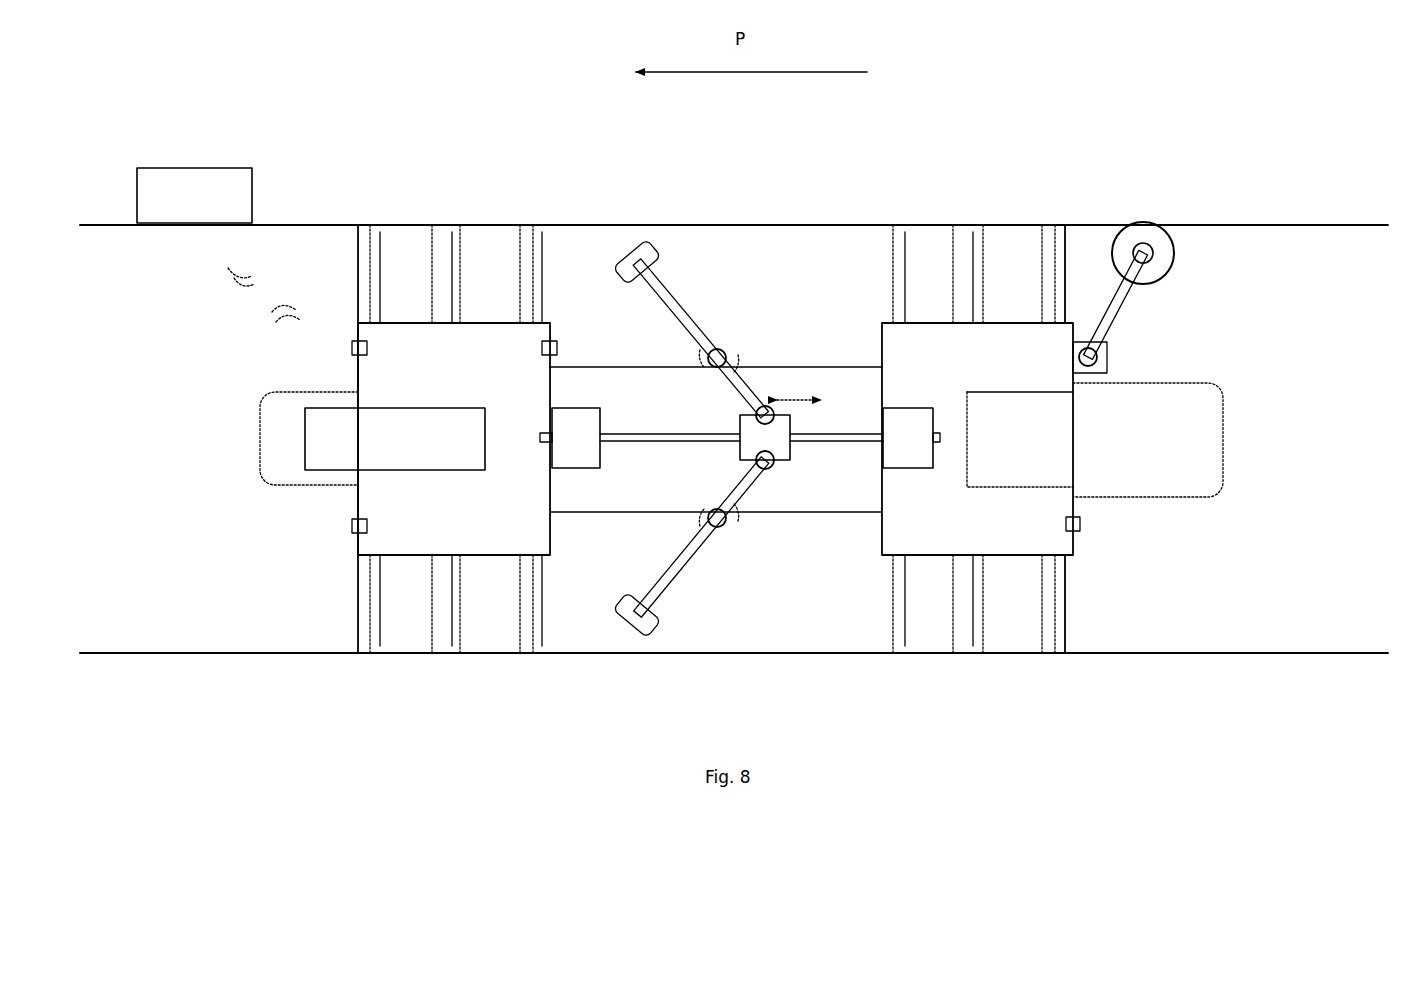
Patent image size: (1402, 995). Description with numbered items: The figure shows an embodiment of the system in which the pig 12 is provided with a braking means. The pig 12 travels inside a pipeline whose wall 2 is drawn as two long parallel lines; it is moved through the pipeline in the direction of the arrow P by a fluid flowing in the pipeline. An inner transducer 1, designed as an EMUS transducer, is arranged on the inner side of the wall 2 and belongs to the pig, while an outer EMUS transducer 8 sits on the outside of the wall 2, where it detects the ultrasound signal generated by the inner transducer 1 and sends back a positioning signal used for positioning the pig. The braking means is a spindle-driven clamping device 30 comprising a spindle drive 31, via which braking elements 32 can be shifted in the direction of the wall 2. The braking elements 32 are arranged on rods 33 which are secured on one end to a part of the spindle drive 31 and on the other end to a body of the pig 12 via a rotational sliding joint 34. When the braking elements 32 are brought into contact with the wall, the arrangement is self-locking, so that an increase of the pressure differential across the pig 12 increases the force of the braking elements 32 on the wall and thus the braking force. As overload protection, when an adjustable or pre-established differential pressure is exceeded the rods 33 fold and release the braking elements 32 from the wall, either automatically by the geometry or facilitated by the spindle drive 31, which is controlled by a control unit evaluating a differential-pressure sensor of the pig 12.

The inner transducer 1 is at (328, 446).
The wall 2 is at (1327, 225).
The outer EMUS transducer 8 is at (225, 180).
The pig 12 is at (1090, 237).
The spindle-driven clamping device 30 is at (780, 288).
The spindle drive 31 is at (828, 441).
The braking elements 32 is at (645, 250).
The rods 33 is at (680, 308).
The rotational sliding joint 34 is at (732, 347).